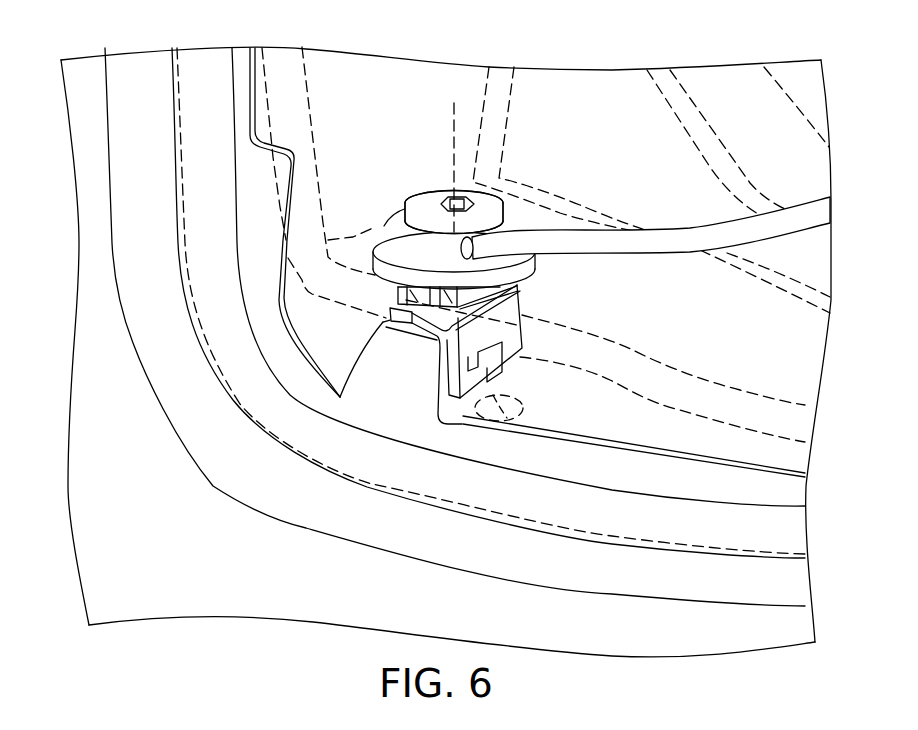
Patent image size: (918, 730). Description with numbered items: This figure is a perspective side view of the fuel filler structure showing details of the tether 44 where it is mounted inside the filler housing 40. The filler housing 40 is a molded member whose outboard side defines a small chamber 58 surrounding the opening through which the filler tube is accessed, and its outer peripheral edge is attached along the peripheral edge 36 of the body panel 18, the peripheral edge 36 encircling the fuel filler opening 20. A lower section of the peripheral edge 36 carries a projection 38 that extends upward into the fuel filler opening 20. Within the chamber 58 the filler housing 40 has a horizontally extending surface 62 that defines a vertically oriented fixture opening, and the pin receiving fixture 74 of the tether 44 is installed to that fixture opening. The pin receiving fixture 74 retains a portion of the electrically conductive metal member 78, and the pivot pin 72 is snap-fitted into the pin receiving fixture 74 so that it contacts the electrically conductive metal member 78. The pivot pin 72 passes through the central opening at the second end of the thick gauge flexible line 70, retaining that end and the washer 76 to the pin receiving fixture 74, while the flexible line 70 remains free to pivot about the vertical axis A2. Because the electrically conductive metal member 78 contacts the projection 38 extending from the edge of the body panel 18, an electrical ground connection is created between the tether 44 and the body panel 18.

The body panel 18 is at (103, 385).
The fuel filler opening 20 is at (649, 453).
The peripheral edge 36 is at (582, 465).
The projection 38 is at (394, 367).
The filler housing 40 is at (200, 77).
The tether 44 is at (703, 256).
The chamber 58 is at (573, 110).
The horizontally extending surface 62 is at (568, 283).
The flexible line 70 is at (665, 243).
The pivot pin 72 is at (422, 202).
The pin receiving fixture 74 is at (398, 297).
The washer 76 is at (376, 257).
The electrically conductive metal member 78 is at (391, 316).
The vertical axis A2 is at (452, 118).